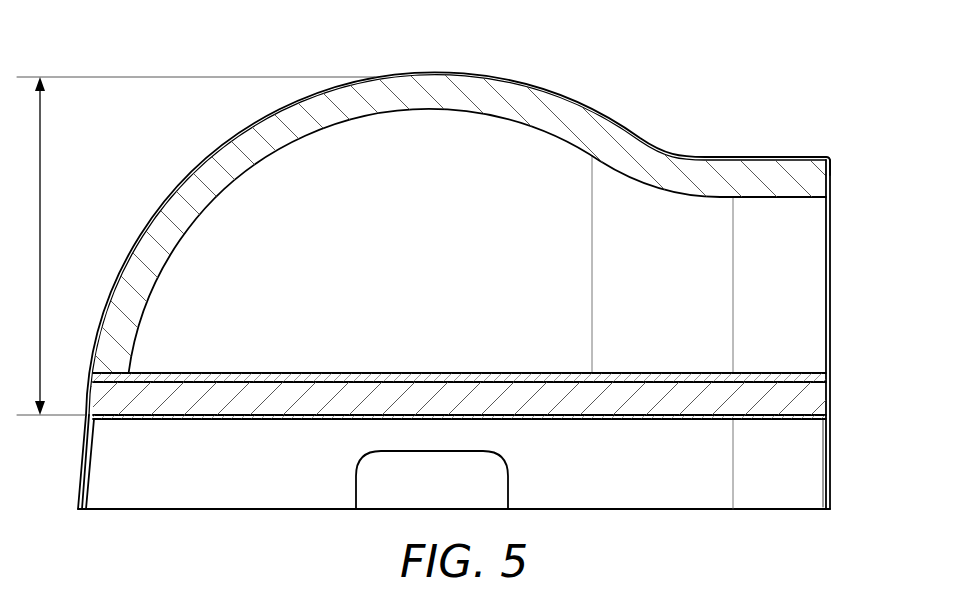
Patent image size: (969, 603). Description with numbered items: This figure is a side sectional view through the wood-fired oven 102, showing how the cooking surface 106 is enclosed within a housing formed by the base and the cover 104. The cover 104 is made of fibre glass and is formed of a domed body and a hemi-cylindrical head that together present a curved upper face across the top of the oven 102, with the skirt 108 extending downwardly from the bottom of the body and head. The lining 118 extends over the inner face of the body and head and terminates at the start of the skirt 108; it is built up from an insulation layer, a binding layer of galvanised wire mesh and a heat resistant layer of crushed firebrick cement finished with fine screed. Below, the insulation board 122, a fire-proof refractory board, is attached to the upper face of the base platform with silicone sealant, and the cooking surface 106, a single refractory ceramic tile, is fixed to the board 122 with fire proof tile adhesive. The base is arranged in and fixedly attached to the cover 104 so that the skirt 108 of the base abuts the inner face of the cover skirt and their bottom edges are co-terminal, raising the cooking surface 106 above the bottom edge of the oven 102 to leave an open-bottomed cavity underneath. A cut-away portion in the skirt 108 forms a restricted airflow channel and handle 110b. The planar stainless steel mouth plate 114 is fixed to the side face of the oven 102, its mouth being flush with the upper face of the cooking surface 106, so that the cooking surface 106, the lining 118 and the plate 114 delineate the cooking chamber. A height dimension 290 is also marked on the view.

The wood-fired oven 102 is at (216, 54).
The cover 104 is at (831, 161).
The cooking surface 106 is at (651, 376).
The skirt 108 is at (92, 466).
The handle 110b is at (433, 453).
The mouth plate 114 is at (832, 268).
The lining 118 is at (668, 172).
The insulation board 122 is at (562, 401).
The height dimension 290 is at (61, 256).